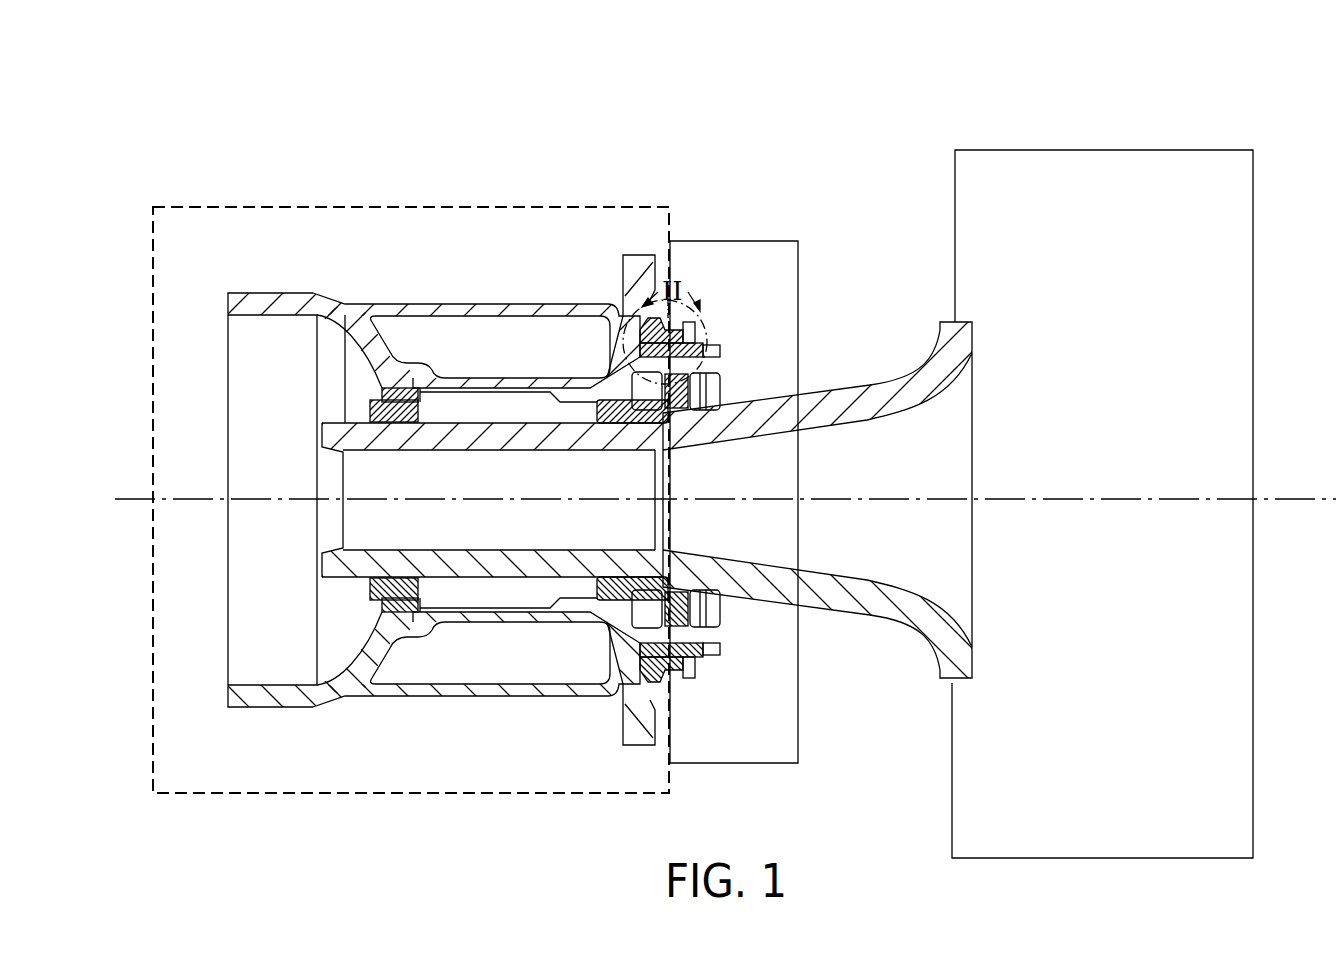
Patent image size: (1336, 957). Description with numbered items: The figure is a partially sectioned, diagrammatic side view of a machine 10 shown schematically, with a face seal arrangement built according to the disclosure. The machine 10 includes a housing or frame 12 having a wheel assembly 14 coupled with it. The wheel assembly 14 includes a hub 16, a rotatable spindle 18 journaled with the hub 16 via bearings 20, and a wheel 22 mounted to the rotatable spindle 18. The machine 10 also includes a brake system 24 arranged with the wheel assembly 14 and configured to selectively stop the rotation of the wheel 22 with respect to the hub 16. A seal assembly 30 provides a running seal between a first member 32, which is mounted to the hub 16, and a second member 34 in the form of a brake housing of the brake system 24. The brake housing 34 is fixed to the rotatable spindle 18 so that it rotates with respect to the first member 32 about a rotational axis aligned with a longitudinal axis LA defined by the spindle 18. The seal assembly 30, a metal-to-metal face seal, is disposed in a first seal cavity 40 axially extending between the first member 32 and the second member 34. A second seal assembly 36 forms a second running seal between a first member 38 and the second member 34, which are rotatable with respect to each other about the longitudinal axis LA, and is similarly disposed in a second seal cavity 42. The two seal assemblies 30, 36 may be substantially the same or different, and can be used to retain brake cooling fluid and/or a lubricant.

The machine 10 is at (168, 175).
The housing or frame 12 is at (285, 205).
The wheel assembly 14 is at (405, 278).
The hub 16 is at (497, 305).
The rotatable spindle 18 is at (918, 383).
The bearings 20 is at (383, 424).
The wheel 22 is at (973, 195).
The brake system 24 is at (808, 742).
The seal assembly 30 is at (697, 312).
The first member 32 is at (636, 298).
The second member 34 is at (700, 338).
The second seal assembly 36 is at (726, 647).
The first member 38 is at (684, 664).
The first seal cavity 40 is at (635, 330).
The second seal cavity 42 is at (727, 615).
The longitudinal axis LA is at (1075, 495).